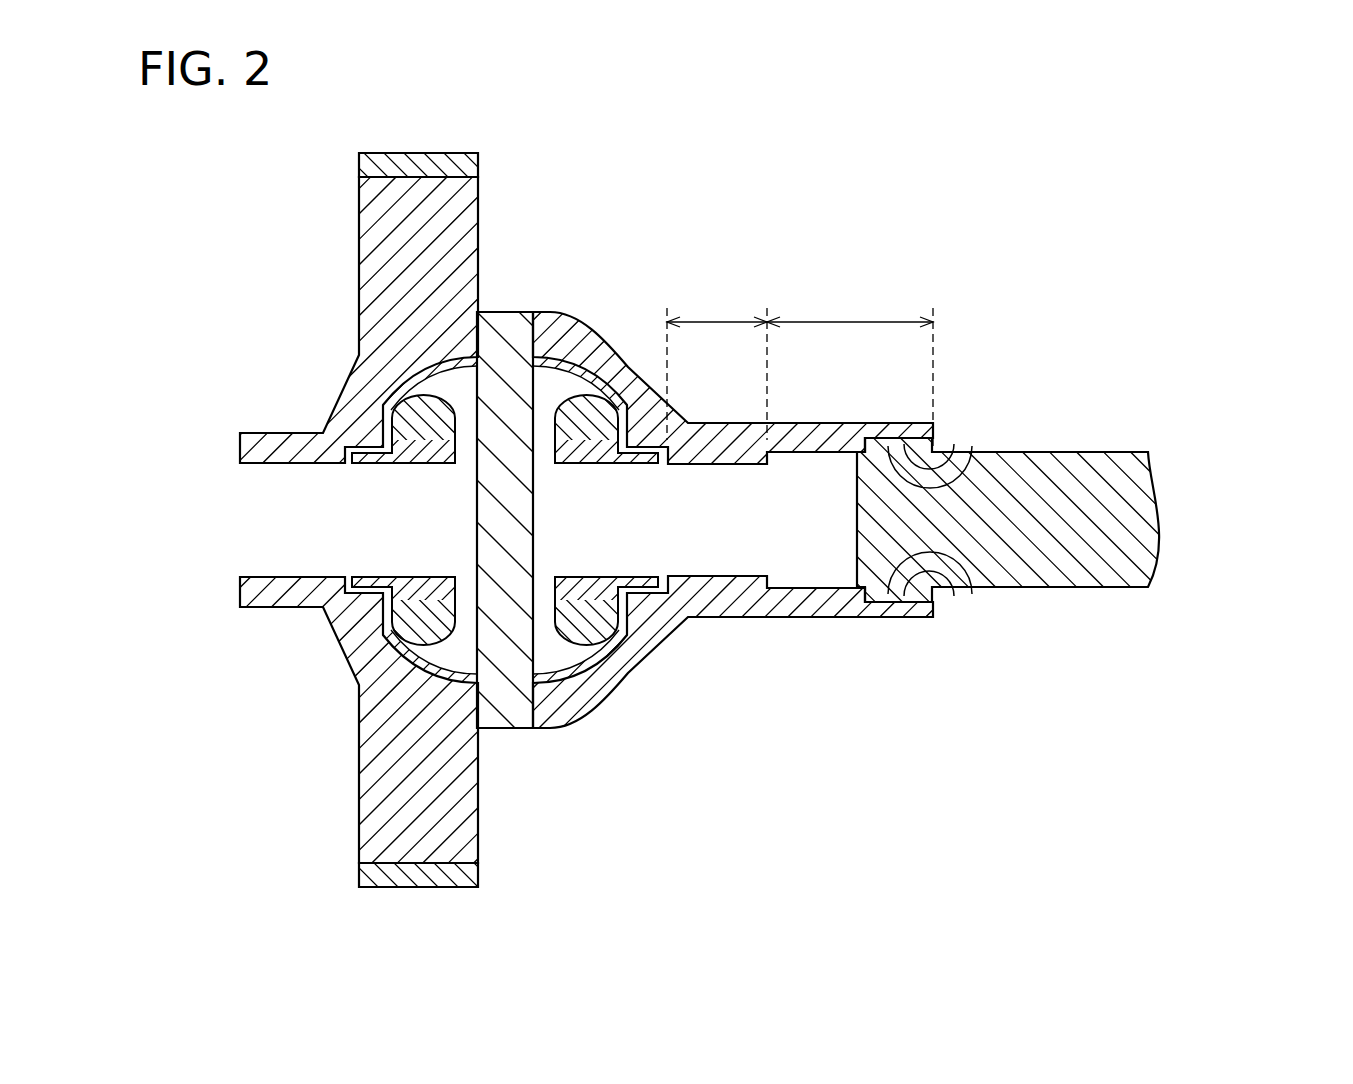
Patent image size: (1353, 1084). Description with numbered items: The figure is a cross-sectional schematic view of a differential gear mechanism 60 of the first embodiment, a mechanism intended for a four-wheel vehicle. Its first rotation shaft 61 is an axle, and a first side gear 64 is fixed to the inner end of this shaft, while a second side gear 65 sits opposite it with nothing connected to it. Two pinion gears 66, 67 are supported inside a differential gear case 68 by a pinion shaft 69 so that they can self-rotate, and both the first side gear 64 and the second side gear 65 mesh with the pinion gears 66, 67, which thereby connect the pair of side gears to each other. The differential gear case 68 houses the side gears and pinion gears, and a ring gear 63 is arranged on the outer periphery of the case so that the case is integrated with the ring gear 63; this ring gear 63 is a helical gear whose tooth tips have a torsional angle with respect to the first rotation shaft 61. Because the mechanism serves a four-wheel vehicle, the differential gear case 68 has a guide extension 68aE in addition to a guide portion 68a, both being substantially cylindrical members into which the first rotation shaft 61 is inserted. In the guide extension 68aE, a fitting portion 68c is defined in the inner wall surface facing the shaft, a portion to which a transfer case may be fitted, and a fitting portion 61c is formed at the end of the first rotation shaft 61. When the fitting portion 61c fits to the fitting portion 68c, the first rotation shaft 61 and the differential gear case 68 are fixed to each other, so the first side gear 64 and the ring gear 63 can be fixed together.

The differential gear mechanism 60 is at (1197, 268).
The first rotation shaft 61 is at (1118, 465).
The fitting portion 61c is at (962, 478).
The ring gear 63 is at (450, 165).
The first side gear 64 is at (622, 405).
The second side gear 65 is at (393, 428).
The pinion gear 66 is at (560, 642).
The pinion gear 67 is at (560, 398).
The differential gear case 68 is at (573, 337).
The guide portion 68a is at (712, 318).
The guide extension 68aE is at (845, 318).
The fitting portion 68c is at (950, 446).
The pinion shaft 69 is at (513, 695).